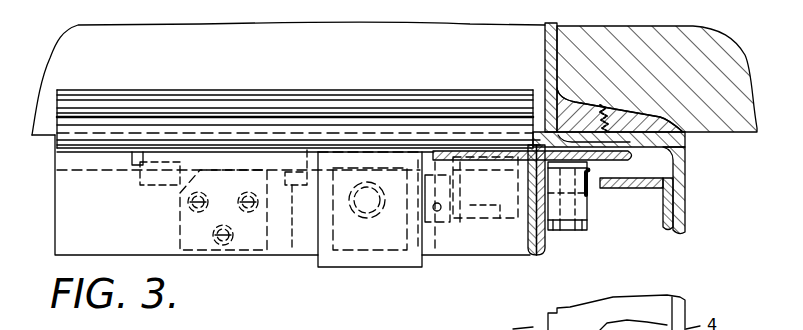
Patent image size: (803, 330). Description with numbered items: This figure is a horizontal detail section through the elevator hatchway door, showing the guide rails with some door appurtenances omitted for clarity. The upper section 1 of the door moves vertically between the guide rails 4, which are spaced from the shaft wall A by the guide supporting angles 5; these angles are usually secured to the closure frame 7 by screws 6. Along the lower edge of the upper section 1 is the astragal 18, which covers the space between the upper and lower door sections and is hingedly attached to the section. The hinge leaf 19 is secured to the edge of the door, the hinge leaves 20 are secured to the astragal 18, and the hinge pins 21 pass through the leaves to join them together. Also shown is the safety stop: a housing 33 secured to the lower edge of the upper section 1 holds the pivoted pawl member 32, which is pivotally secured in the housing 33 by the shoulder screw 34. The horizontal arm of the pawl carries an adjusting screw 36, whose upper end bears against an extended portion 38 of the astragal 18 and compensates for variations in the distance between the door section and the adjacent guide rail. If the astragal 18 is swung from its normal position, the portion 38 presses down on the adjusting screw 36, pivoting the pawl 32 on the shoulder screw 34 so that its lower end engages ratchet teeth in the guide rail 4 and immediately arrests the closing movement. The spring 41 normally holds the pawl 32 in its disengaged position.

The upper section 1 is at (72, 211).
The astragal 18 is at (284, 102).
The closure frame 7 is at (545, 62).
The shaft wall A is at (730, 68).
The screws 6 is at (619, 100).
The guide rails 4 is at (687, 168).
The guide supporting angles 5 is at (688, 185).
The pivoted pawl member 32 is at (514, 200).
The shoulder screw 34 is at (575, 232).
The spring 41 is at (588, 196).
The portion of the astragal 38 is at (456, 216).
The adjusting screw 36 is at (437, 212).
The housing 33 is at (490, 226).
The hinge leaf 19 is at (249, 256).
The hinge leaves 20 is at (140, 188).
The hinge pins 21 is at (173, 199).